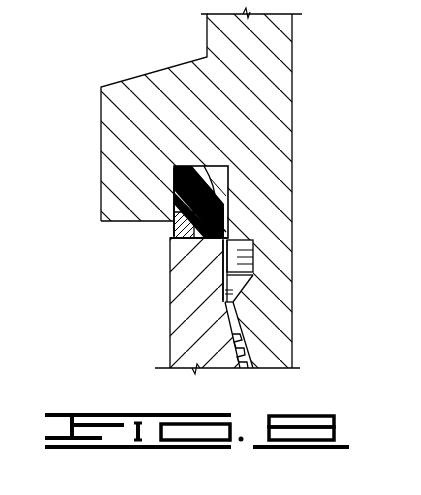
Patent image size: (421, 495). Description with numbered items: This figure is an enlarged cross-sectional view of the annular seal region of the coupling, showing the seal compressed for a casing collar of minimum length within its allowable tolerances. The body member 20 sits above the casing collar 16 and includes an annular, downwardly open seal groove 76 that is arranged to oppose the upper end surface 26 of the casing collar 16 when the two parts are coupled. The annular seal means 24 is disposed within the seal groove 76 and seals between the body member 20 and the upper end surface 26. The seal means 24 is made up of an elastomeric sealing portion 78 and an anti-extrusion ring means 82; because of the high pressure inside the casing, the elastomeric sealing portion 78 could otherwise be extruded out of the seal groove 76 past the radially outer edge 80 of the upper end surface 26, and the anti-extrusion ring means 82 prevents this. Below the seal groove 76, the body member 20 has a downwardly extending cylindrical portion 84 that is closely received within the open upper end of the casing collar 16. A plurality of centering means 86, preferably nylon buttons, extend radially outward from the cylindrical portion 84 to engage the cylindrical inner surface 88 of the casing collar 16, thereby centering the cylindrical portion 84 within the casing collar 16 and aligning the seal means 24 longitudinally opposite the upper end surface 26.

The casing collar 16 is at (187, 316).
The body member 20 is at (268, 52).
The annular seal means 24 is at (216, 190).
The upper end surface of casing collar 26 is at (210, 218).
The seal groove 76 is at (173, 179).
The elastomeric sealing portion 78 is at (224, 166).
The radially outer edge of upper end 80 is at (173, 245).
The anti-extrusion ring means 82 is at (178, 226).
The cylindrical portion 84 is at (268, 328).
The centering means 86 is at (250, 253).
The cylindrical inner surface of casing collar 88 is at (226, 302).